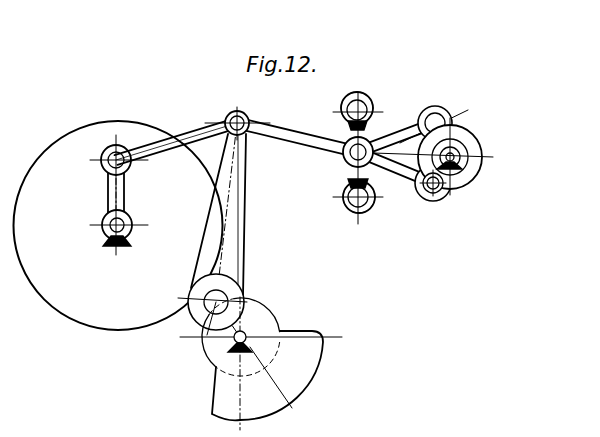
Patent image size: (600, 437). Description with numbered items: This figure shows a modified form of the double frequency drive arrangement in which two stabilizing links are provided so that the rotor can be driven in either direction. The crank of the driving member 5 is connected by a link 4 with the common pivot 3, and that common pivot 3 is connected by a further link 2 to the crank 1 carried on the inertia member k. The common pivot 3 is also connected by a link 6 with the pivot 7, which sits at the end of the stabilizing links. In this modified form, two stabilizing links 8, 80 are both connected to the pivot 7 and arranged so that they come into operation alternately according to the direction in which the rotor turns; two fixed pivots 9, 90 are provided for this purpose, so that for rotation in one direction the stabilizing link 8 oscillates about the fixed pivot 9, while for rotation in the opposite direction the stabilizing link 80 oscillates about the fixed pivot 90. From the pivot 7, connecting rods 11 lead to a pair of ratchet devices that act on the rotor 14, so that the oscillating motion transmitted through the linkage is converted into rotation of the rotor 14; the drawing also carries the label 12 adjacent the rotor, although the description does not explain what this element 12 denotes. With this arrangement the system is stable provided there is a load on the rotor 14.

The crank 1 is at (110, 200).
The link 2 is at (183, 140).
The common pivot 3 is at (238, 111).
The link 4 is at (228, 236).
The driving member 5 is at (258, 357).
The link 6 is at (295, 137).
The pivot 7 is at (347, 162).
The stabilizing link 8 is at (368, 120).
The fixed pivot 9 is at (357, 92).
The connecting rods 11 is at (405, 127).
The roller pivot 12 is at (462, 162).
The rotor 14 is at (468, 142).
The stabilizing link 80 is at (373, 178).
The fixed pivot 90 is at (358, 169).
The inertia member k is at (115, 313).